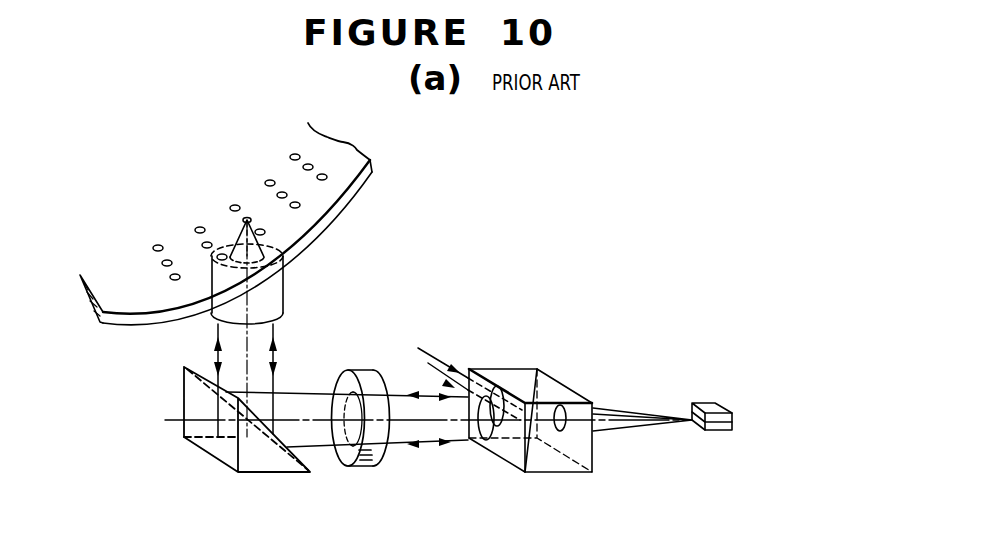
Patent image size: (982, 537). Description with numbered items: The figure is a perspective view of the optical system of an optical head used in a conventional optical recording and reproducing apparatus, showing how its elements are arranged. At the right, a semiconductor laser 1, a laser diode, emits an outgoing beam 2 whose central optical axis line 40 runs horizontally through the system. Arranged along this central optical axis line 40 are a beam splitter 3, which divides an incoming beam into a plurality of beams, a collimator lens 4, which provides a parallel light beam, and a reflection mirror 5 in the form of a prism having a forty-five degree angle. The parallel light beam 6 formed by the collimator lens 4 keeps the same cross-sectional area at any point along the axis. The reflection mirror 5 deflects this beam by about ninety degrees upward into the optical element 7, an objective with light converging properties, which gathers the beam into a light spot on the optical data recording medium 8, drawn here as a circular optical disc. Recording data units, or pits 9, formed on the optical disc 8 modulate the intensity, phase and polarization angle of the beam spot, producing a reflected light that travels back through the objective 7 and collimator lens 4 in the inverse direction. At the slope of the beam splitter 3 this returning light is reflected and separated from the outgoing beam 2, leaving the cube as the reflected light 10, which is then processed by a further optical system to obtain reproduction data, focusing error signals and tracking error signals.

The semiconductor laser 1 is at (713, 433).
The outgoing beam 2 is at (630, 431).
The beam splitter 3 is at (545, 473).
The collimator lens 4 is at (365, 467).
The reflection mirror 5 is at (265, 473).
The parallel light beam 6 is at (305, 392).
The optical element 7 is at (272, 292).
The optical data recording medium 8 is at (345, 202).
The recording data units 9 is at (268, 181).
The reflected light 10 is at (434, 356).
The central optical axis line 40 is at (648, 422).